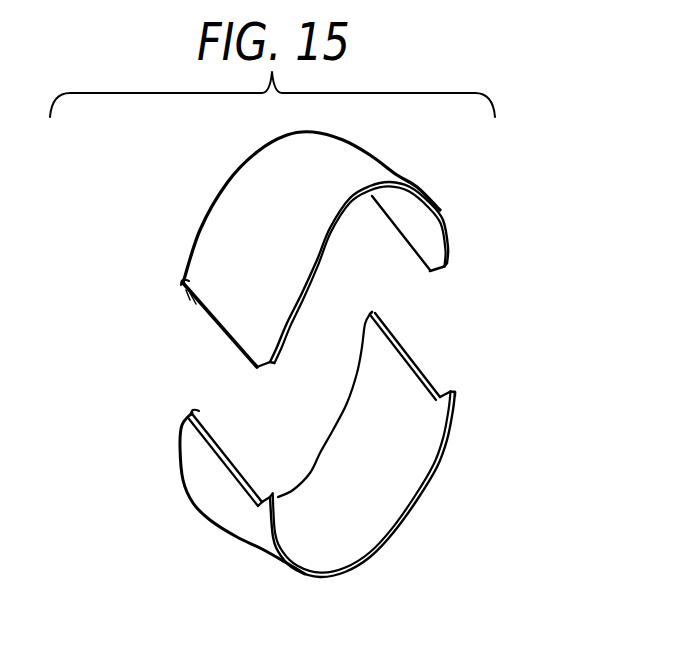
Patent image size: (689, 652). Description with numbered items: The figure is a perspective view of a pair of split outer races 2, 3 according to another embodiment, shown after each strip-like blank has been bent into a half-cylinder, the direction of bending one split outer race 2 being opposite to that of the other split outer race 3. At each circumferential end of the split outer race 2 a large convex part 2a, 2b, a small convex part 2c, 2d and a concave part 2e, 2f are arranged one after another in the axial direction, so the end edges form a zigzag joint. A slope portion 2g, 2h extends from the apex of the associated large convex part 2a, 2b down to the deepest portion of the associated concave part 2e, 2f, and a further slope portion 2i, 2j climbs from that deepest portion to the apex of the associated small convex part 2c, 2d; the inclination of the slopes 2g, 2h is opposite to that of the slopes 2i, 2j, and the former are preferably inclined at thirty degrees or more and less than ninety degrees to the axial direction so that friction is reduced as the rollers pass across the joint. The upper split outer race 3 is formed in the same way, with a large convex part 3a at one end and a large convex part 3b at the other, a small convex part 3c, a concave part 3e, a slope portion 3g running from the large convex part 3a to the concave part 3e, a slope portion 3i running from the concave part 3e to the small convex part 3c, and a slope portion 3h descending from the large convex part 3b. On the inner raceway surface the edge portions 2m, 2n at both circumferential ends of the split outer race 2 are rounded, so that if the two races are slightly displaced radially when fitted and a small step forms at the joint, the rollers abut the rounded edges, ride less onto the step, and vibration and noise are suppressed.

The split outer race 2 is at (328, 432).
The large convex part 2a is at (190, 418).
The large convex part 2b is at (372, 313).
The small convex part 2c is at (283, 494).
The small convex part 2d is at (458, 392).
The concave part 2e is at (268, 484).
The concave part 2f is at (444, 385).
The slope portion 2g is at (233, 465).
The slope portion 2h is at (412, 360).
The slope portion 2i is at (276, 488).
The slope portion 2j is at (456, 391).
The edge portion 2m is at (222, 445).
The edge portion 2n is at (392, 348).
The split outer race 3 is at (252, 274).
The large convex part 3a is at (250, 367).
The large convex part 3b is at (427, 273).
The small convex part 3c is at (182, 285).
The concave part 3e is at (192, 298).
The slope portion 3g is at (213, 328).
The slope portion 3h is at (390, 230).
The slope portion 3i is at (187, 297).